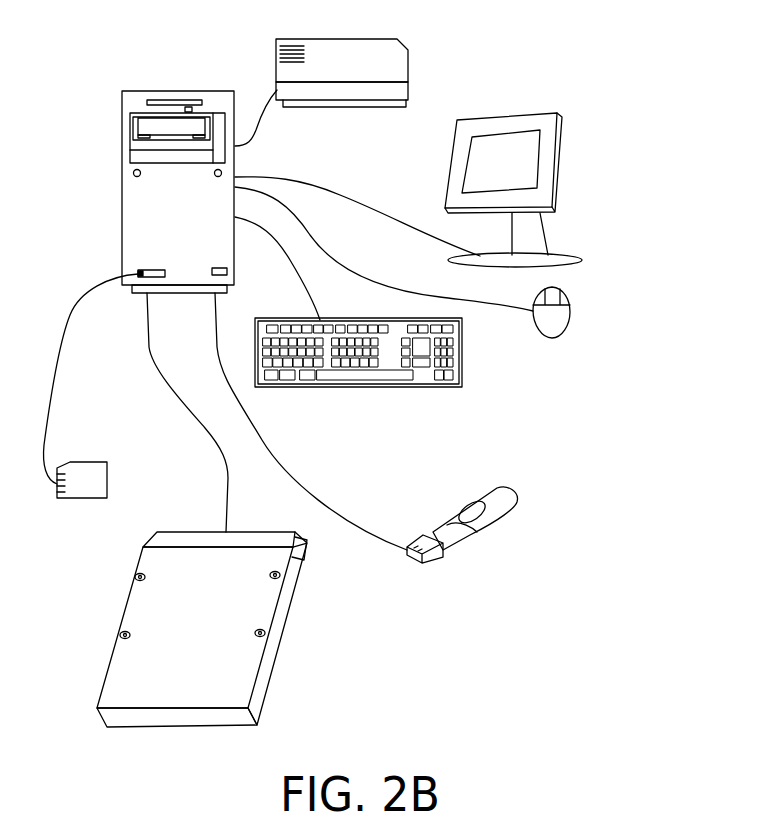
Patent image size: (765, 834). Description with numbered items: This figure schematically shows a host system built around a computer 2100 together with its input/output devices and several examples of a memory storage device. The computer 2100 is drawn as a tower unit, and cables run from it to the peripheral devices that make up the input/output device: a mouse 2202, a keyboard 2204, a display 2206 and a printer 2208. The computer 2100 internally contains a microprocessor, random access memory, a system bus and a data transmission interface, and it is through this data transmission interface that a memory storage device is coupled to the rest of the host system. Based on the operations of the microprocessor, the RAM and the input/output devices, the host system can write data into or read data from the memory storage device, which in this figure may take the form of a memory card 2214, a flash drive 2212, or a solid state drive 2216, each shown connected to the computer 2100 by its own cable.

The computer 2100 is at (180, 91).
The printer 2208 is at (337, 39).
The display 2206 is at (512, 113).
The mouse 2202 is at (572, 317).
The keyboard 2204 is at (465, 362).
The memory card 2214 is at (107, 470).
The solid state drive (SSD) 2216 is at (252, 521).
The flash drive 2212 is at (457, 512).